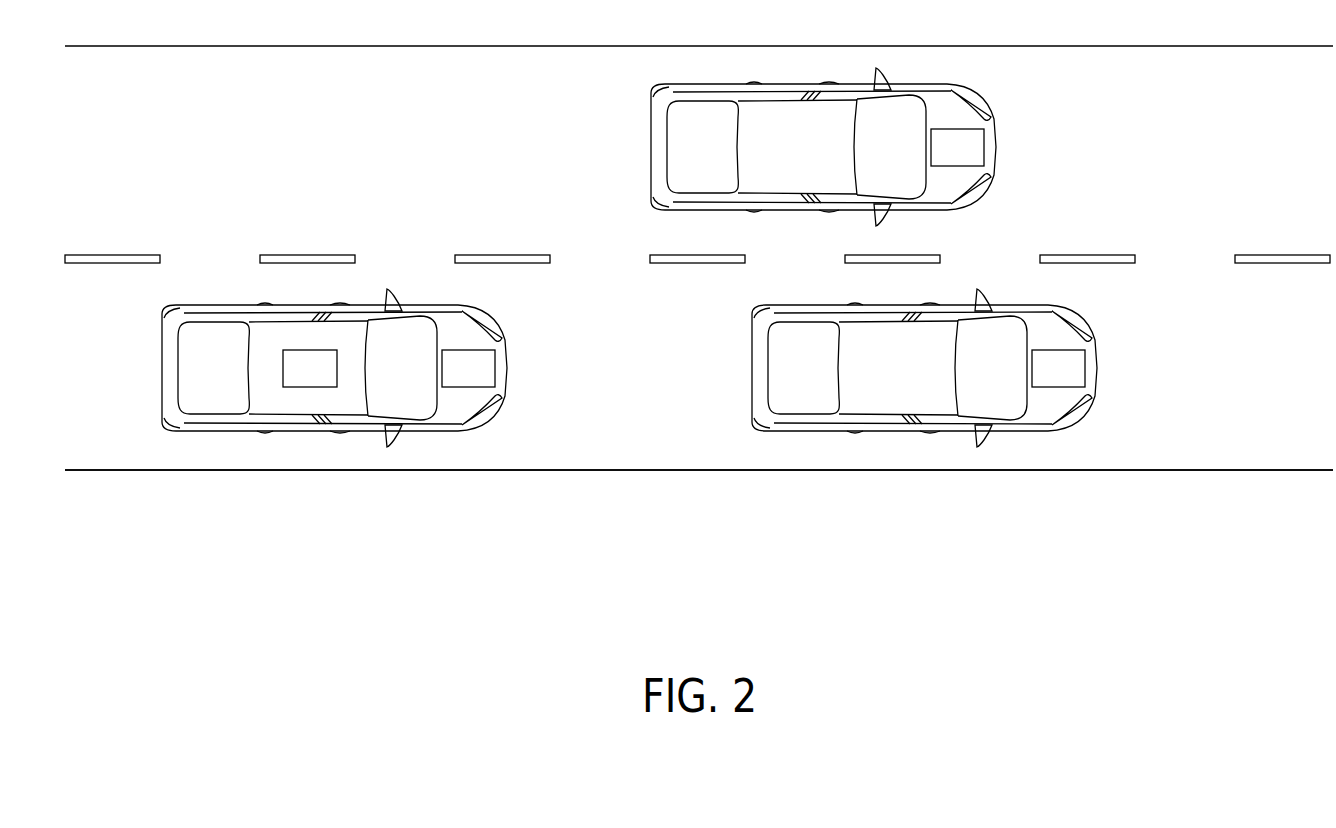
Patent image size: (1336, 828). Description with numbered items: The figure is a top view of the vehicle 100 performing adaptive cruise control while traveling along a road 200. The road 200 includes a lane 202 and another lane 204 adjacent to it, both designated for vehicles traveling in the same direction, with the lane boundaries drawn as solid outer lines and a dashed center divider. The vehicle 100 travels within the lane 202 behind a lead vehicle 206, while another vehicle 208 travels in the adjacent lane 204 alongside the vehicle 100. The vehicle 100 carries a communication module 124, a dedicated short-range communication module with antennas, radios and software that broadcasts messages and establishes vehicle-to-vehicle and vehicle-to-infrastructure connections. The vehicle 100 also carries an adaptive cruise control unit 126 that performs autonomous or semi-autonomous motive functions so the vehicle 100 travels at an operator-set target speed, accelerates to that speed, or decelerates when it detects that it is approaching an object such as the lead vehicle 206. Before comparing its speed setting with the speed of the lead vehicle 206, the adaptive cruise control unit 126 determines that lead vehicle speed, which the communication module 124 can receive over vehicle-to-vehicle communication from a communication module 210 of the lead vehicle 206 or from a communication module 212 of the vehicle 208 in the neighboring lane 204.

The vehicle 100 is at (162, 368).
The communication module 124 is at (486, 382).
The adaptive cruise control unit 126 is at (328, 382).
The road 200 is at (1168, 470).
The lane 202 is at (1267, 383).
The lane 204 is at (1267, 156).
The lead vehicle 206 is at (752, 368).
The vehicle 208 is at (651, 147).
The communication module 210 is at (1076, 382).
The communication module 212 is at (975, 161).